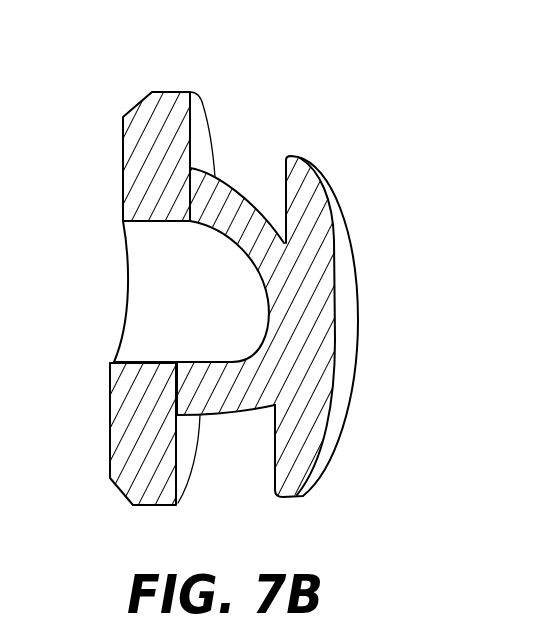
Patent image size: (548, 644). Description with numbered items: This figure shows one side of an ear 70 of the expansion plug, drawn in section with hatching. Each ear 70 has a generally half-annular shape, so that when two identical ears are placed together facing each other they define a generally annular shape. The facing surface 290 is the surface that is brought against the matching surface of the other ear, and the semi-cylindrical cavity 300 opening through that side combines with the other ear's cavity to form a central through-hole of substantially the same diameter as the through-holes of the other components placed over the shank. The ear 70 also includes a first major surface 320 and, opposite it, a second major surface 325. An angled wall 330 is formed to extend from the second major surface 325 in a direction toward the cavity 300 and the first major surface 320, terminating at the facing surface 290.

The ear 70 is at (100, 102).
The facing surface 290 is at (158, 132).
The semi-cylindrical cavity 300 is at (172, 323).
The first major surface 320 is at (110, 444).
The second major surface 325 is at (348, 335).
The angled wall 330 is at (222, 210).